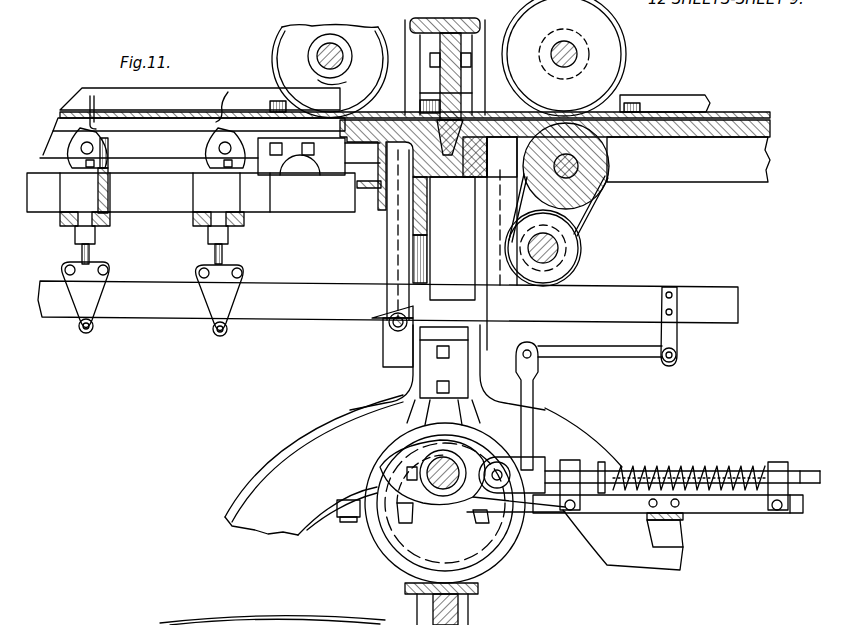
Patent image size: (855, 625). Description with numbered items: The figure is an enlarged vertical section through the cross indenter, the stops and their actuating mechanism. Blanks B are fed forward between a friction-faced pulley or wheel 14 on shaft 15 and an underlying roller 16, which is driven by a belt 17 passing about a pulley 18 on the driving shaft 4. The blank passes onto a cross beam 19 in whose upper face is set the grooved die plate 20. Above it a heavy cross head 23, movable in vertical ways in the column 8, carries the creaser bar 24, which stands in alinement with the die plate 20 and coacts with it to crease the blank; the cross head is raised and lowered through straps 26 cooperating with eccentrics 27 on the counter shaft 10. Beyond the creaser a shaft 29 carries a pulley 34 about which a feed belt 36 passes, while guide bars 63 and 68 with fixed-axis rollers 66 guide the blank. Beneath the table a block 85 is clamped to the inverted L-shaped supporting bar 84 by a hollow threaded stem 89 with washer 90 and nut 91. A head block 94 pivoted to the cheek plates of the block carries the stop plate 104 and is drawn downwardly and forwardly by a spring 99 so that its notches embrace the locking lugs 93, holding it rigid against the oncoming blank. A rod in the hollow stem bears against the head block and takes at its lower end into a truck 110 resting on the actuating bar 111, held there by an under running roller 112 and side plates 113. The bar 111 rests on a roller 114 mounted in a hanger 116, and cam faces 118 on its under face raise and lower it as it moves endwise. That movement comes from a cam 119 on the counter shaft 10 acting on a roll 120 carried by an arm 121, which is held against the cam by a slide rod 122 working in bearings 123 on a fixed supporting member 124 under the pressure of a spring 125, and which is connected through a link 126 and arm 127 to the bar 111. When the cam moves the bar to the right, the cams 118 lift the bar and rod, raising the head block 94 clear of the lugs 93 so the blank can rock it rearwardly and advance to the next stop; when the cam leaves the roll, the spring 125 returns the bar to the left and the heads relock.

The blanks B is at (676, 115).
The bar 63 is at (655, 98).
The shaft 29 is at (330, 46).
The pulley 34 is at (332, 87).
The cross head 23 is at (430, 22).
The creaser bar 24 is at (432, 106).
The pulley or wheel 14 is at (618, 52).
The shaft 15 is at (576, 62).
The rollers 66 is at (272, 105).
The roller 16 is at (605, 183).
The belt 17 is at (585, 226).
The driving shaft 4 is at (560, 253).
The pulley 18 is at (560, 268).
The guide bar or rail 68 is at (200, 99).
The belt 36 is at (205, 112).
The stop plate 104 is at (98, 125).
The head block or casing 94 is at (105, 148).
The locking lug 93 is at (100, 170).
The spring 99 is at (110, 182).
The block or casting 85 is at (110, 190).
The supporting bar 84 is at (319, 170).
The washer 90 is at (110, 222).
The nut 91 is at (95, 238).
The hollow threaded stem 89 is at (92, 250).
The truck 110 is at (108, 270).
The side plates 113 is at (153, 296).
The under running roller 112 is at (94, 328).
The actuating bar 111 is at (388, 302).
The cam faces 118 is at (383, 316).
The roller 114 is at (388, 324).
The hanger 116 is at (390, 352).
The cross beam 19 is at (427, 222).
The die plate 20 is at (455, 140).
The arm 121 is at (535, 390).
The link 126 is at (616, 358).
The arm 127 is at (678, 340).
The cam 119 is at (395, 468).
The counter shaft 10 is at (500, 548).
The eccentrics 27 is at (496, 553).
The straps 26 is at (498, 572).
The roll 120 is at (495, 457).
The side frame or column 8 is at (454, 482).
The slide rod 122 is at (548, 470).
The bearings 123 is at (580, 462).
The spring 125 is at (708, 466).
The fixed supporting member 124 is at (736, 515).